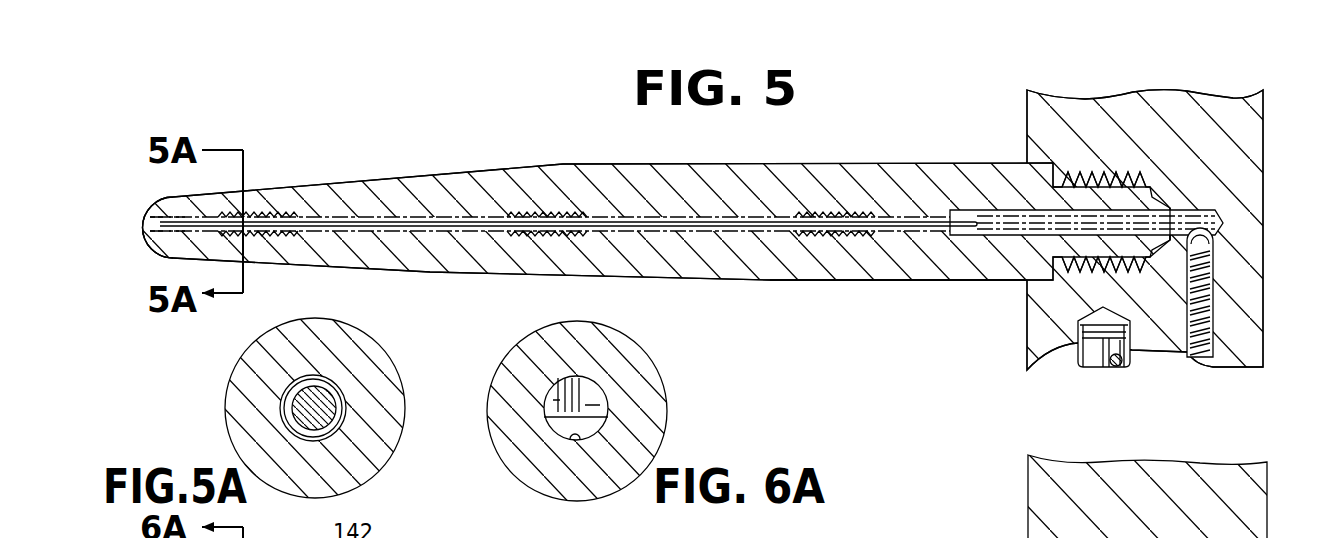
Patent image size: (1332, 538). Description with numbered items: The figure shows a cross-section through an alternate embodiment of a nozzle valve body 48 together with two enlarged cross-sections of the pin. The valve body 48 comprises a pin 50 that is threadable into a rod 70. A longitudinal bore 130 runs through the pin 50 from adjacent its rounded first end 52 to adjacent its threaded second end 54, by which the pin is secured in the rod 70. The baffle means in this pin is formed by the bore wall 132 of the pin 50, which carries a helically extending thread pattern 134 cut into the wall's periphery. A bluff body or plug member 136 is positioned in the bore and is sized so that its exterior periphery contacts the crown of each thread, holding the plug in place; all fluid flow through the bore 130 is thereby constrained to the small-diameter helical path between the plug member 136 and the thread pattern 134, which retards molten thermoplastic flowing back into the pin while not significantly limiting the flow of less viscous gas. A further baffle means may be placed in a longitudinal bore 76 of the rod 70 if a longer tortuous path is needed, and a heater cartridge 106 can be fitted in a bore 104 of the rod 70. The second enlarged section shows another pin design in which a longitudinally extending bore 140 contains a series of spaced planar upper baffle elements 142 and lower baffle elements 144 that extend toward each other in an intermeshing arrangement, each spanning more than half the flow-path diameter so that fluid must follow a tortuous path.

In FIG. 5, the valve body 48 is at (878, 160).
In FIG. 6A, the valve body 48 is at (890, 533).
In FIG. 5, the pin 50 is at (827, 284).
In FIG. 5A, the pin 50 is at (410, 384).
In FIG. 6A, the pin 50 is at (670, 407).
In FIG. 5, the rounded first end 52 is at (172, 218).
In FIG. 5, the threaded second end 54 is at (1105, 195).
In FIG. 6A, the threaded second end 54 is at (1110, 537).
In FIG. 5, the rod 70 is at (1268, 146).
In FIG. 6A, the rod 70 is at (1273, 508).
In FIG. 5, the longitudinal bore 76 is at (1204, 283).
In FIG. 5, the bore 104 is at (1078, 342).
In FIG. 5, the heater cartridge 106 is at (1095, 352).
In FIG. 5, the longitudinal bore 130 is at (160, 240).
In FIG. 5, the bore wall 132 is at (503, 218).
In FIG. 5, the helically extending thread pattern 134 is at (560, 222).
In FIG. 5A, the helically extending thread pattern 134 is at (306, 378).
In FIG. 5, the plug member 136 is at (393, 223).
In FIG. 5A, the plug member 136 is at (337, 417).
In FIG. 6A, the longitudinally extending bore 140 is at (573, 436).
In FIG. 6A, the upper baffle elements 142 is at (583, 390).
In FIG. 6A, the lower baffle elements 144 is at (558, 425).